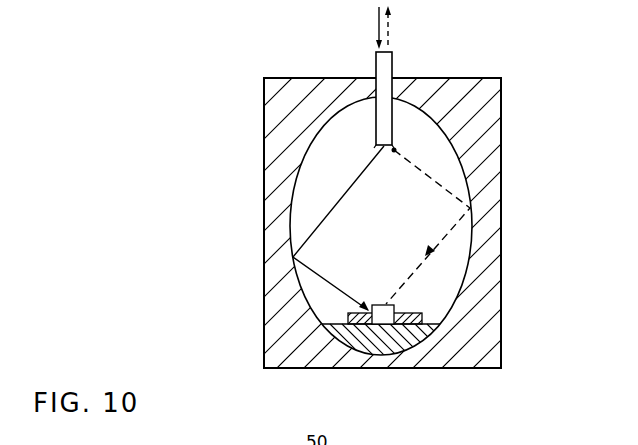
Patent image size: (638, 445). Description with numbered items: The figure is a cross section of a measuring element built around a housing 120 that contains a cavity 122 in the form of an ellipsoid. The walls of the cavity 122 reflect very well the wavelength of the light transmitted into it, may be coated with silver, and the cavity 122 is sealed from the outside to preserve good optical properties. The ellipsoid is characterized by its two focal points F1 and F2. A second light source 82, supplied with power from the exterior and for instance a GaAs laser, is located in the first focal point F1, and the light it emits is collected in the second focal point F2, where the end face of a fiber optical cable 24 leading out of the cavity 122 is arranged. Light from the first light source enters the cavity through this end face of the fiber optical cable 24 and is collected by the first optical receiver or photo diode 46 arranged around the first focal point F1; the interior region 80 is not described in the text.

The fiber optical cable 24 is at (387, 63).
The housing 120 is at (495, 112).
The cavity 122 is at (435, 152).
The second focal point F2 is at (395, 150).
The cavity 80 is at (447, 232).
The first focal point F1 is at (390, 301).
The second light source 82 is at (398, 308).
The first optical receiver or photo diode 46 is at (420, 320).